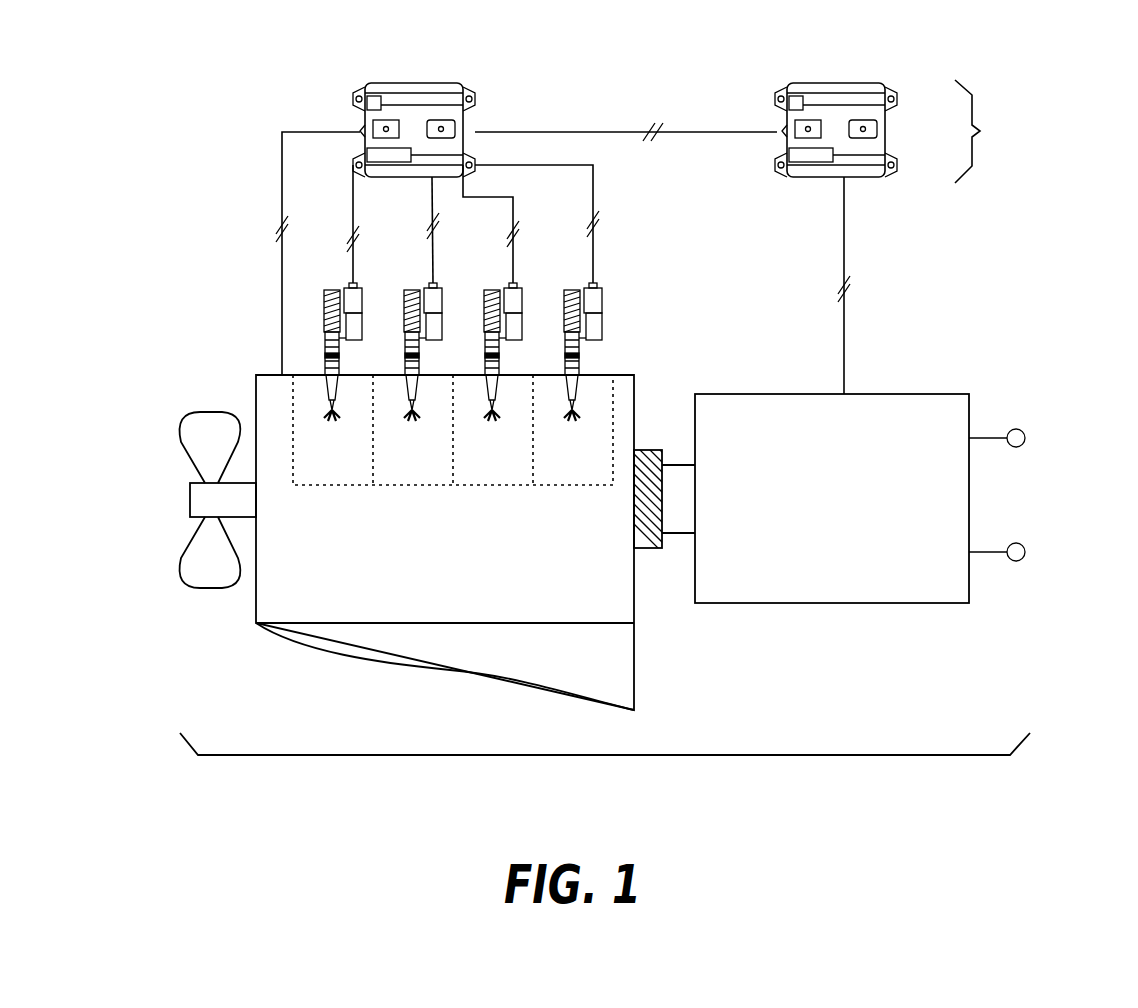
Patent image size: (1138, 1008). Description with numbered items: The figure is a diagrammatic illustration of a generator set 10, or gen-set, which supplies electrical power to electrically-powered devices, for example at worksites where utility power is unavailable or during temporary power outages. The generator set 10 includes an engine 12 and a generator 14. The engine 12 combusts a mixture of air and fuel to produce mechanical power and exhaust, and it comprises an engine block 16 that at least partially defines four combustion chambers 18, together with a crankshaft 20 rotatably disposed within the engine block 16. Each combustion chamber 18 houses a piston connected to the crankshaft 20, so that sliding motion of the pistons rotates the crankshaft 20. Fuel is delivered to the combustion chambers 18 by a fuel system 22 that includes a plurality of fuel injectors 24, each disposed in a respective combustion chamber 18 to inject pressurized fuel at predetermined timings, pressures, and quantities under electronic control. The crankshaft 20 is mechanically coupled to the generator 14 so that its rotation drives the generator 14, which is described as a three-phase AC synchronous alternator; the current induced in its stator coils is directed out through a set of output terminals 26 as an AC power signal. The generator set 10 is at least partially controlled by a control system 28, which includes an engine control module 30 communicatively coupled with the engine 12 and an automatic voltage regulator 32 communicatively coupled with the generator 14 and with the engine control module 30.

The generator set 10 is at (601, 757).
The engine 12 is at (447, 590).
The generator 14 is at (819, 565).
The engine block 16 is at (250, 586).
The combustion chambers 18 is at (364, 485).
The crankshaft 20 is at (680, 535).
The fuel system 22 is at (255, 346).
The fuel injectors 24 is at (322, 326).
The output terminals 26 is at (1017, 429).
The control system 28 is at (981, 131).
The engine control module 30 is at (385, 83).
The automatic voltage regulator 32 is at (820, 83).